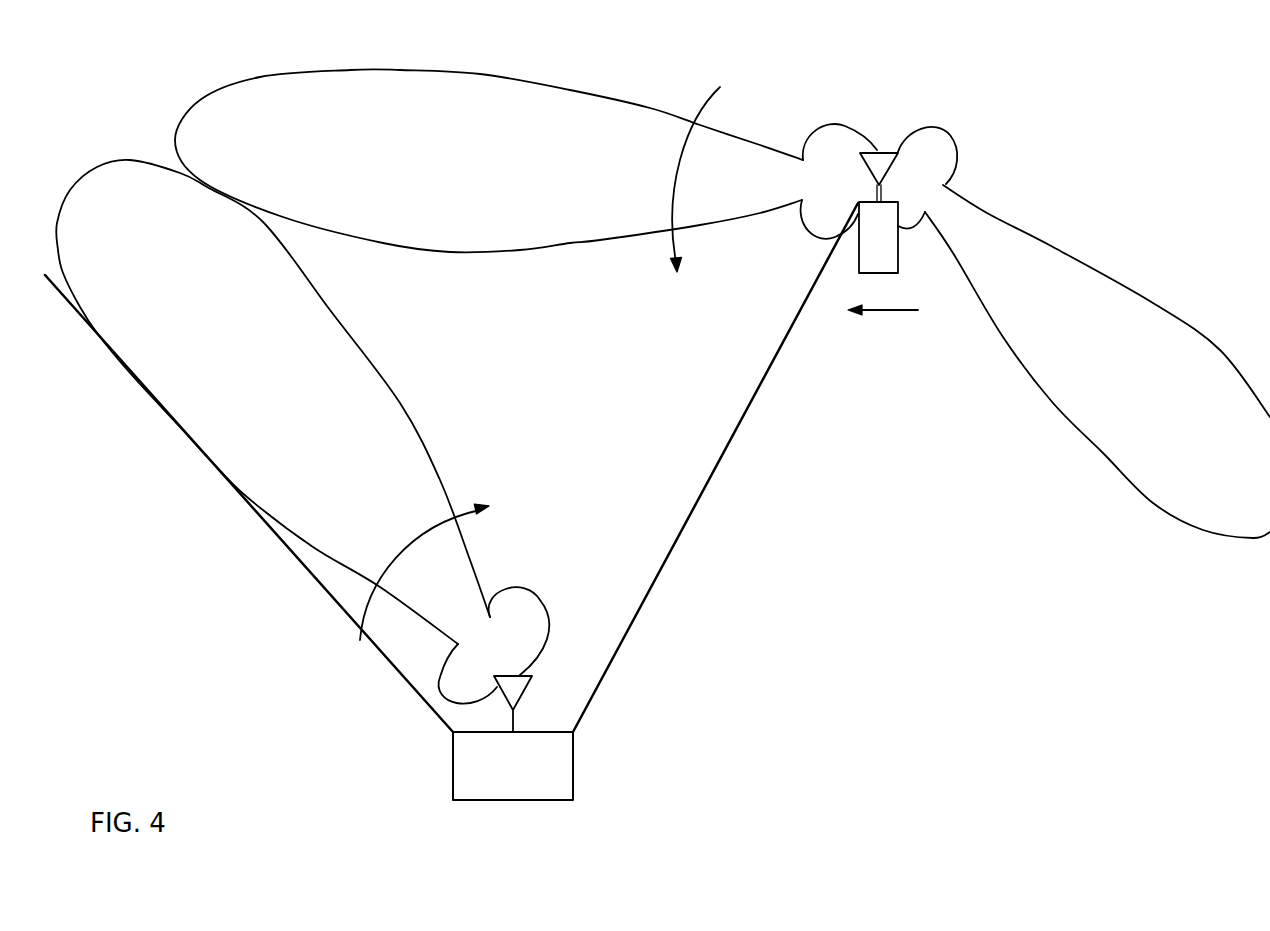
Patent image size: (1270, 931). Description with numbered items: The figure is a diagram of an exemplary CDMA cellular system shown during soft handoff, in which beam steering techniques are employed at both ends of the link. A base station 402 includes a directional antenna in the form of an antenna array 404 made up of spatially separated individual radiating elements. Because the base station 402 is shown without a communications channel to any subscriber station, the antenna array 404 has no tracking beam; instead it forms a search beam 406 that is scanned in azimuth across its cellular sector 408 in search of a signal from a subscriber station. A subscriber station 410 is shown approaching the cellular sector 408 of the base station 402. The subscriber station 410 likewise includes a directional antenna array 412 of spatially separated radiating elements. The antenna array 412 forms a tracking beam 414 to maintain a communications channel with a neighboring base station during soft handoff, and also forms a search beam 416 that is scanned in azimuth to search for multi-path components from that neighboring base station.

The base station 402 is at (484, 802).
The antenna array 404 is at (535, 679).
The search beam 406 is at (413, 422).
The cellular sector 408 is at (755, 394).
The subscriber station 410 is at (897, 273).
The antenna array 412 is at (878, 152).
The tracking beam 414 is at (1155, 305).
The search beam 416 is at (615, 100).